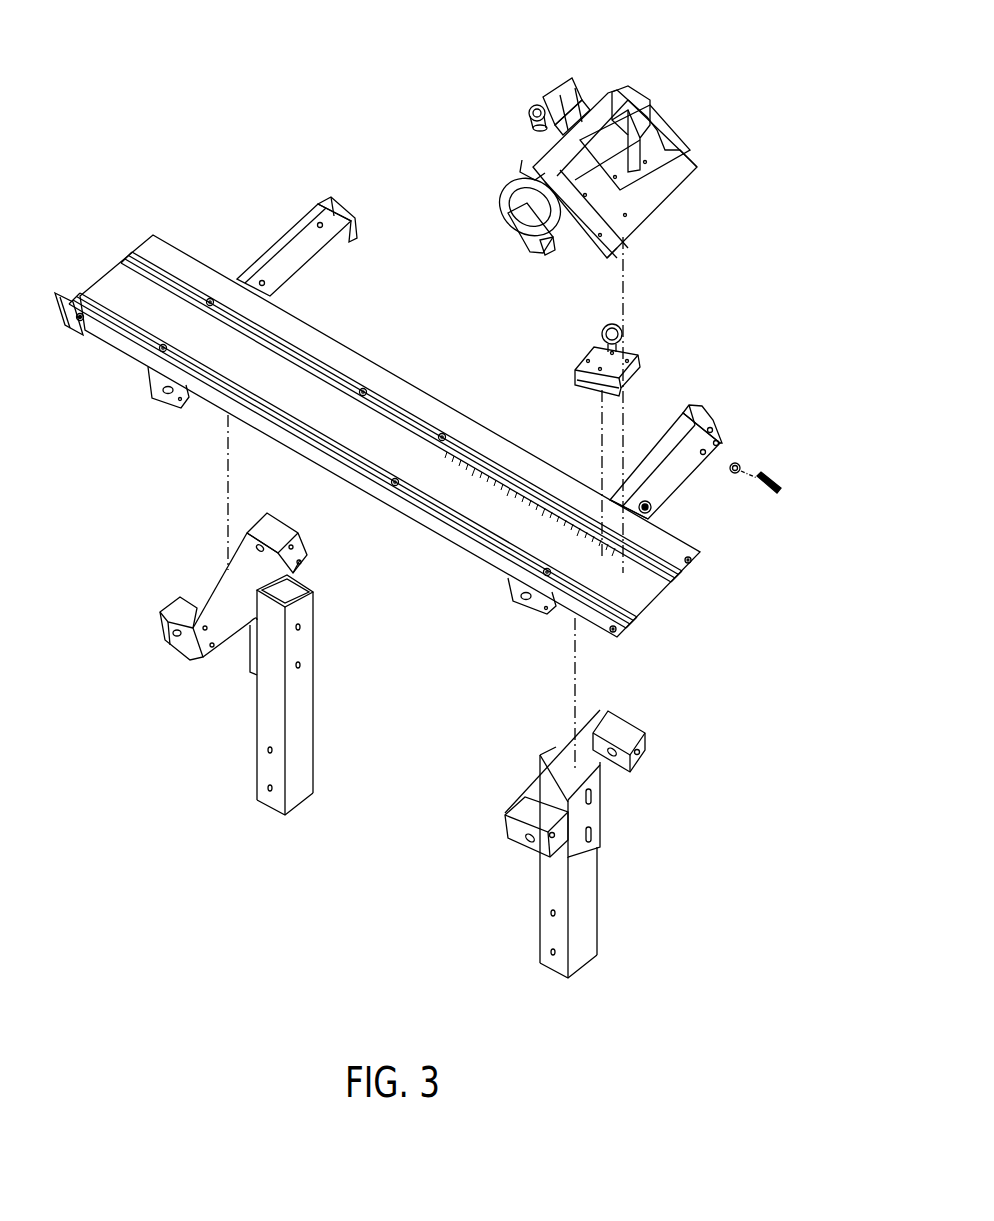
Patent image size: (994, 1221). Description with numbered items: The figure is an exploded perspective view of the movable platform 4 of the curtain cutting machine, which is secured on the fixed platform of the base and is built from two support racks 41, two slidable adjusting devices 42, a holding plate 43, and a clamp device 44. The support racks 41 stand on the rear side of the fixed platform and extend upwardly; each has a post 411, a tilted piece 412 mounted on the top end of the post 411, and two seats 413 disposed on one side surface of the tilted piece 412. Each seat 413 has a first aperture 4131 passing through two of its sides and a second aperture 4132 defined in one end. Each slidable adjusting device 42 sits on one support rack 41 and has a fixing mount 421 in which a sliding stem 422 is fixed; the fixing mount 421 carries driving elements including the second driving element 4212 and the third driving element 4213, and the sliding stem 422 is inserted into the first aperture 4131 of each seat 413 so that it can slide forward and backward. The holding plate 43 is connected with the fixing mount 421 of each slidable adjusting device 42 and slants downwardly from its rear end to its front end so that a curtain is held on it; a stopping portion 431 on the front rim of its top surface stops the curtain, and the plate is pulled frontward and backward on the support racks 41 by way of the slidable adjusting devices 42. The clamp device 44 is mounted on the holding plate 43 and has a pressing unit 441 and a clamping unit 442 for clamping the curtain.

The movable platform 4 is at (660, 91).
The support rack 41 is at (452, 745).
The post 411 is at (585, 913).
The tilted piece 412 is at (533, 783).
The seat 413 is at (627, 730).
The first aperture 4131 is at (530, 843).
The second aperture 4132 is at (640, 752).
The slidable adjusting device 42 is at (342, 205).
The fixing mount 421 is at (675, 473).
The second driving element 4212 is at (648, 510).
The third driving element 4213 is at (763, 477).
The sliding stem 422 is at (665, 445).
The holding plate 43 is at (398, 442).
The stopping portion 431 is at (67, 310).
The clamp device 44 is at (607, 138).
The pressing unit 441 is at (530, 116).
The clamping unit 442 is at (633, 140).